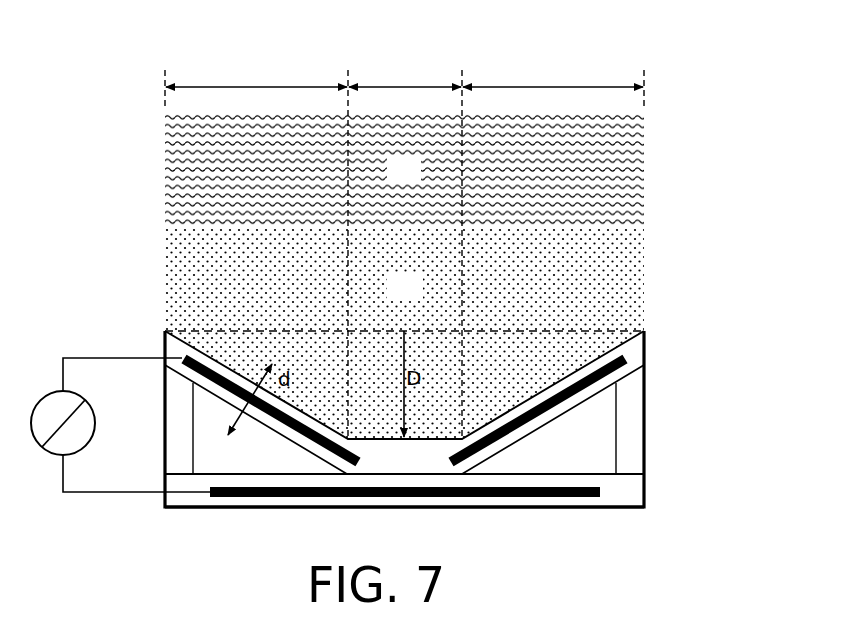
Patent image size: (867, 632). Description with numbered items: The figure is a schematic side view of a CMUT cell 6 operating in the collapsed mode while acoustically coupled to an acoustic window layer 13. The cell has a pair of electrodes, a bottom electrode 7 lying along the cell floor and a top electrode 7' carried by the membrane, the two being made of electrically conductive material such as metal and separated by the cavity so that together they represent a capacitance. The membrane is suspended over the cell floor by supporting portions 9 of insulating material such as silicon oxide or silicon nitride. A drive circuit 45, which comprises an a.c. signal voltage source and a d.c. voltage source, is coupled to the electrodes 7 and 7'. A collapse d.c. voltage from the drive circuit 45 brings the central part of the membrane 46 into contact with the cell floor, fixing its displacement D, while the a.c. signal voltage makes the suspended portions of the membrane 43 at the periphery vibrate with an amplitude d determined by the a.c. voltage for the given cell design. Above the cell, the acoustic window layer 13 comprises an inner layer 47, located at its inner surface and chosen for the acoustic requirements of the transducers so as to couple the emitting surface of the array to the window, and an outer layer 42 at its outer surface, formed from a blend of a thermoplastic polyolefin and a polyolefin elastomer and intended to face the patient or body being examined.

The CMUT cell 6 is at (62, 38).
The bottom electrode 7 is at (405, 528).
The top electrode 7' is at (406, 410).
The supporting portions 9 is at (630, 445).
The acoustic window layer 13 is at (644, 245).
The outer layer 42 is at (418, 178).
The suspended portions of the membrane 43 is at (254, 85).
The drive circuit 45 is at (45, 395).
The central part of the membrane 46 is at (405, 85).
The inner layer 47 is at (420, 296).